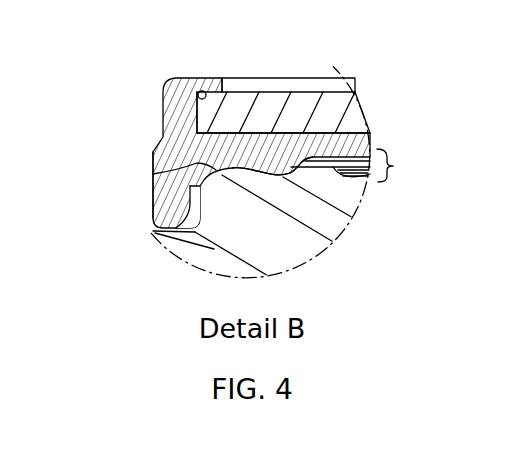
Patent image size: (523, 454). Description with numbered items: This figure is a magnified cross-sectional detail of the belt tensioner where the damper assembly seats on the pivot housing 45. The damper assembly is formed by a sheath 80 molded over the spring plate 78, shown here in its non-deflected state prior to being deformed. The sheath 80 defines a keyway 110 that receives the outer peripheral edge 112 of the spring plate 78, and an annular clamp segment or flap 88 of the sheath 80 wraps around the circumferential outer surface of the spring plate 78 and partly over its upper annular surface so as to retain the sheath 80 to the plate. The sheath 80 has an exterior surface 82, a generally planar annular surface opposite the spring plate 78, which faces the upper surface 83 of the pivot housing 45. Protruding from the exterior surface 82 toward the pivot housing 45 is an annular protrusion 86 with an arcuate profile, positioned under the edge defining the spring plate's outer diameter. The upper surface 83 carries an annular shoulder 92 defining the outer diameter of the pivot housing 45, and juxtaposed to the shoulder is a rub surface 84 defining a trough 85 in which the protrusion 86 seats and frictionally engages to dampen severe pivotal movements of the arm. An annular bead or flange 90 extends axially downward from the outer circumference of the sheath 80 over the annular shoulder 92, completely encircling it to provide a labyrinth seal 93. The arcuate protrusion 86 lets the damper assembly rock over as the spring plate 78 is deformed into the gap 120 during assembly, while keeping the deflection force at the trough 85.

The pivot housing 45 is at (319, 240).
The spring plate 78 is at (418, 88).
The sheath 80 is at (168, 117).
The exterior surface 82 is at (358, 151).
The upper surface 83 is at (353, 174).
The rub surface 84 is at (291, 167).
The trough 85 is at (245, 174).
The annular protrusion 86 is at (153, 174).
The annular clamp segment or flap 88 is at (211, 95).
The annular bead or flange 90 is at (153, 197).
The annular shoulder 92 is at (203, 193).
The labyrinth seal 93 is at (146, 232).
The keyway 110 is at (206, 95).
The outer peripheral edge 112 is at (203, 98).
The gap 120 is at (409, 165).